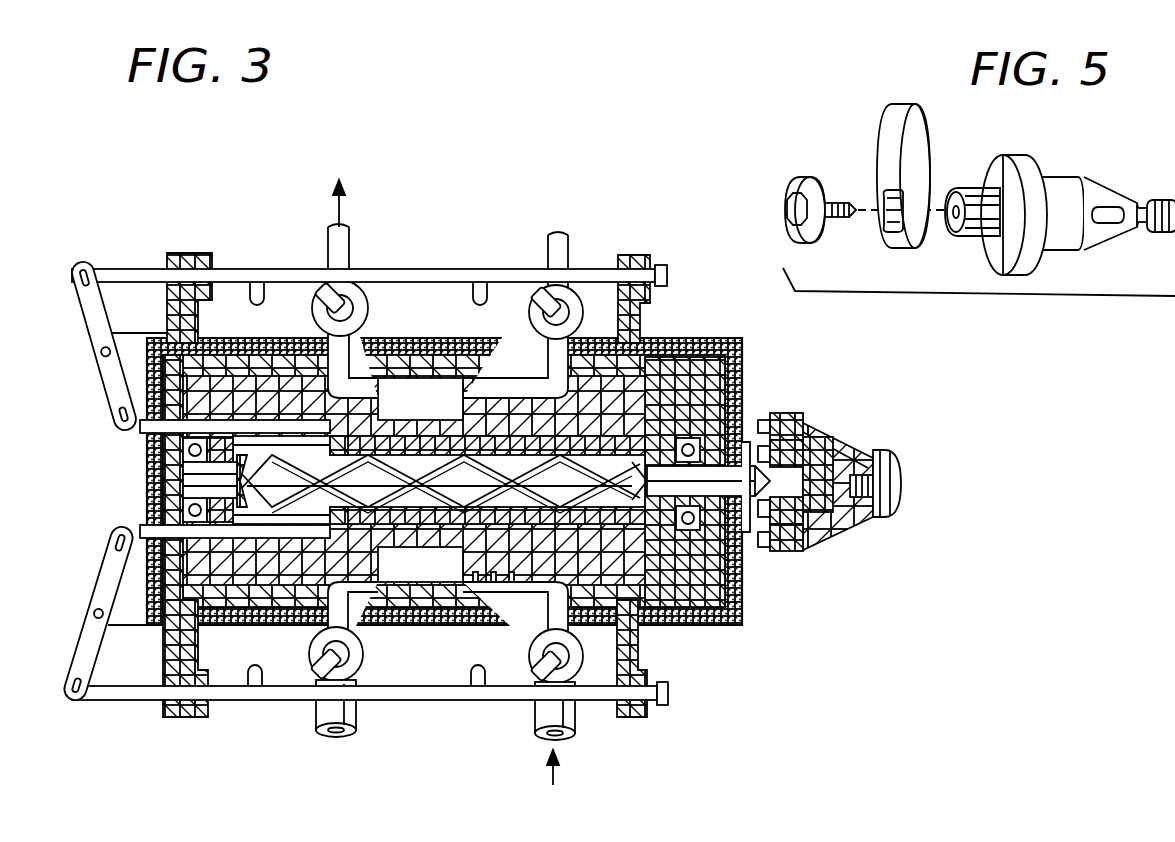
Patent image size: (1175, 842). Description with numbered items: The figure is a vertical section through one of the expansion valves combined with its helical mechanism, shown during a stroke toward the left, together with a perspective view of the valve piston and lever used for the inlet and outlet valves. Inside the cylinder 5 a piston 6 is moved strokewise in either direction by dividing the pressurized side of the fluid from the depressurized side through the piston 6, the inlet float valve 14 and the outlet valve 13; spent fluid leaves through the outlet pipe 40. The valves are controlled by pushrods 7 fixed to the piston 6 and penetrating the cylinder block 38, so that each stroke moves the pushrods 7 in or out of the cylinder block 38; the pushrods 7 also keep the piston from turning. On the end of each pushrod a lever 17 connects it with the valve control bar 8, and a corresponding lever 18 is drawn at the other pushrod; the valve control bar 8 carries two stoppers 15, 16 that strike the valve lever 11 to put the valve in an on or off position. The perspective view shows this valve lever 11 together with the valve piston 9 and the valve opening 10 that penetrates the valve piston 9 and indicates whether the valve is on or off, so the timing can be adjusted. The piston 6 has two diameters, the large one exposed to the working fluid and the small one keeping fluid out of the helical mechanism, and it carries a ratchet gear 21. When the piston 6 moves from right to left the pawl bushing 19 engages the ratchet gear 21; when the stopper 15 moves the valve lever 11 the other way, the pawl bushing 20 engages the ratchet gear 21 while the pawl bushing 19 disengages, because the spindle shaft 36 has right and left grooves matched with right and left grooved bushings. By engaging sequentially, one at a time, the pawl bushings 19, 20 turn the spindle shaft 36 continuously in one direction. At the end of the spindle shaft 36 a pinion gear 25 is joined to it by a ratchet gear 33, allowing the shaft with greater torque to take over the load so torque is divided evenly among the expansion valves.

In FIG. 3, the cylinder 5 is at (232, 370).
In FIG. 3, the piston 6 is at (395, 380).
In FIG. 3, the pushrod 7 is at (268, 365).
In FIG. 3, the valve control bar 8 is at (138, 272).
In FIG. 5, the valve piston 9 is at (1063, 200).
In FIG. 5, the valve opening 10 is at (1112, 210).
In FIG. 3, the valve lever 11 is at (313, 305).
In FIG. 5, the valve lever 11 is at (915, 150).
In FIG. 3, the outlet valve 13 is at (360, 312).
In FIG. 3, the inlet float valve 14 is at (530, 652).
In FIG. 3, the stopper 15 is at (262, 295).
In FIG. 3, the stopper 16 is at (346, 292).
In FIG. 3, the lever 17 is at (108, 398).
In FIG. 3, the lower lever 18 is at (108, 575).
In FIG. 3, the pawl bushing 19 is at (405, 575).
In FIG. 3, the pawl bushing 20 is at (600, 442).
In FIG. 3, the ratchet gear 21 is at (478, 425).
In FIG. 3, the pinion gear 25 is at (842, 436).
In FIG. 3, the ratchet gear 33 is at (820, 507).
In FIG. 3, the spindle shaft 36 is at (770, 520).
In FIG. 3, the cylinder block 38 is at (640, 400).
In FIG. 3, the outlet pipe 40 is at (327, 240).